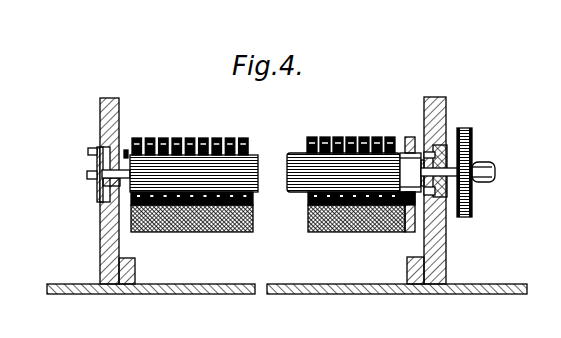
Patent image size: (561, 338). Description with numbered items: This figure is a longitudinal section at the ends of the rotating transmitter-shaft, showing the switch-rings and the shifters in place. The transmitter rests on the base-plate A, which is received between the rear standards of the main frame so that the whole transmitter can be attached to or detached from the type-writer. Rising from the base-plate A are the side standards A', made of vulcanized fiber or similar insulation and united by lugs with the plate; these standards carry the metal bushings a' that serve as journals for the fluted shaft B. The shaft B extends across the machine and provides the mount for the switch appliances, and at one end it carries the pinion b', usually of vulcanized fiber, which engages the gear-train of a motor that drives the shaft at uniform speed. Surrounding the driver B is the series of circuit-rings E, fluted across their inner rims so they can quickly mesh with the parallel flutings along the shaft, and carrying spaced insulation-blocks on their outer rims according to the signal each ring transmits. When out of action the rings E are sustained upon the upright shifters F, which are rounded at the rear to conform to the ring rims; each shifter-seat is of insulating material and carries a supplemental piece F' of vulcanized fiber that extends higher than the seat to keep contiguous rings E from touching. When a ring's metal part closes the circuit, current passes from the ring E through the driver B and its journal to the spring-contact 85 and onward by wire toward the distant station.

The base-plate A is at (287, 309).
The side standards A' is at (269, 190).
The metal bushings a' is at (285, 161).
The spring-contact 85 is at (127, 150).
The fluted shaft B is at (296, 152).
The circuit-rings E is at (370, 137).
The shifters F is at (273, 233).
The supplemental piece F' is at (222, 234).
The pinion b' is at (487, 174).